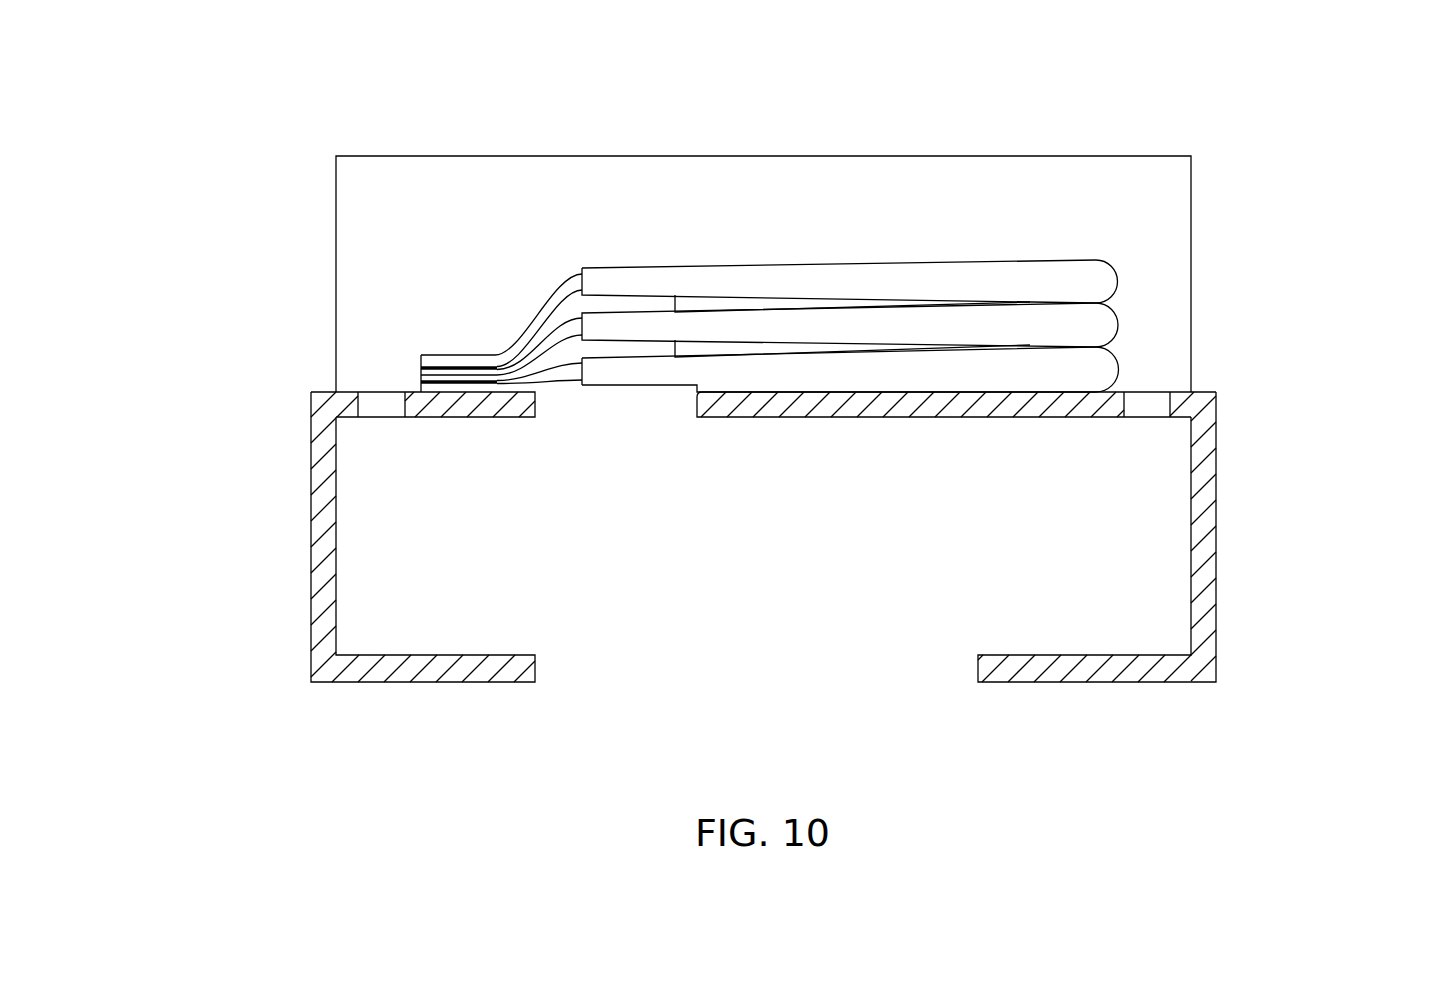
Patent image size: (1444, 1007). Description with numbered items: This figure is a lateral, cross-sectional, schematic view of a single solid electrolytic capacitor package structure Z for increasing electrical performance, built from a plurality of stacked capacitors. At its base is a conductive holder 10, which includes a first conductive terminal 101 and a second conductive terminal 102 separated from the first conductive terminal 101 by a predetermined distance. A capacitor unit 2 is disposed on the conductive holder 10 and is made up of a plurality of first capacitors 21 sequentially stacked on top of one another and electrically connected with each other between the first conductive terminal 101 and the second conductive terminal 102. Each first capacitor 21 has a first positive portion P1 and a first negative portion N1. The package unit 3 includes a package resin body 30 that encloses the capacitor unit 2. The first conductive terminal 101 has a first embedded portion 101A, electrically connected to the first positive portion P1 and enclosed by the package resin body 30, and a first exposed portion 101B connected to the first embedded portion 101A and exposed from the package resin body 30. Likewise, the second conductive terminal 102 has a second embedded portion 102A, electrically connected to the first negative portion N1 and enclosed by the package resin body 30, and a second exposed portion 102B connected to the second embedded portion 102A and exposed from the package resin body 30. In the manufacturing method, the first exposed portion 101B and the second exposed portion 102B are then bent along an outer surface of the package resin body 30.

The solid electrolytic capacitor package structure Z is at (242, 63).
The package unit 3 is at (336, 233).
The package resin body 30 is at (360, 277).
The first positive portion P1 is at (540, 304).
The first negative portion N1 is at (958, 265).
The capacitor unit 2 is at (931, 286).
The first capacitor 21 is at (916, 286).
The conductive holder 10 is at (763, 537).
The first conductive terminal 101 is at (343, 537).
The first embedded portion 101A is at (455, 403).
The first exposed portion 101B is at (333, 553).
The second conductive terminal 102 is at (1040, 537).
The second embedded portion 102A is at (1078, 403).
The second exposed portion 102B is at (1195, 546).